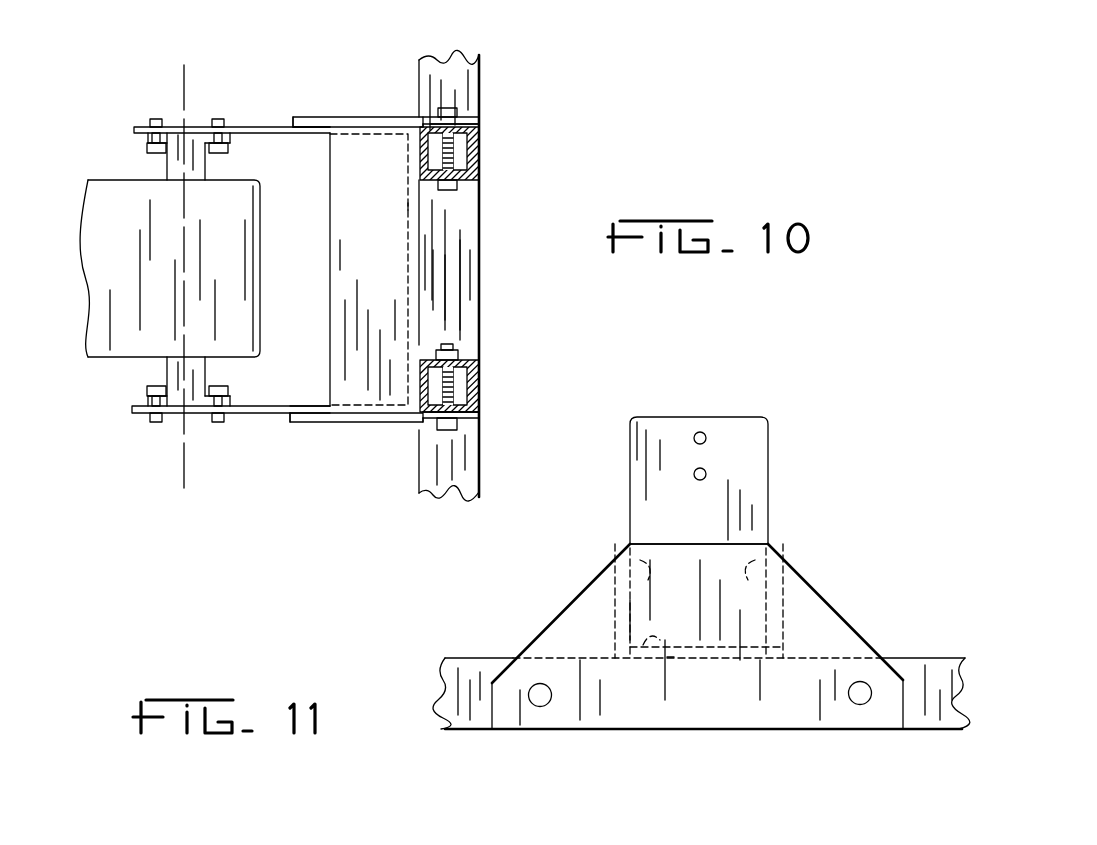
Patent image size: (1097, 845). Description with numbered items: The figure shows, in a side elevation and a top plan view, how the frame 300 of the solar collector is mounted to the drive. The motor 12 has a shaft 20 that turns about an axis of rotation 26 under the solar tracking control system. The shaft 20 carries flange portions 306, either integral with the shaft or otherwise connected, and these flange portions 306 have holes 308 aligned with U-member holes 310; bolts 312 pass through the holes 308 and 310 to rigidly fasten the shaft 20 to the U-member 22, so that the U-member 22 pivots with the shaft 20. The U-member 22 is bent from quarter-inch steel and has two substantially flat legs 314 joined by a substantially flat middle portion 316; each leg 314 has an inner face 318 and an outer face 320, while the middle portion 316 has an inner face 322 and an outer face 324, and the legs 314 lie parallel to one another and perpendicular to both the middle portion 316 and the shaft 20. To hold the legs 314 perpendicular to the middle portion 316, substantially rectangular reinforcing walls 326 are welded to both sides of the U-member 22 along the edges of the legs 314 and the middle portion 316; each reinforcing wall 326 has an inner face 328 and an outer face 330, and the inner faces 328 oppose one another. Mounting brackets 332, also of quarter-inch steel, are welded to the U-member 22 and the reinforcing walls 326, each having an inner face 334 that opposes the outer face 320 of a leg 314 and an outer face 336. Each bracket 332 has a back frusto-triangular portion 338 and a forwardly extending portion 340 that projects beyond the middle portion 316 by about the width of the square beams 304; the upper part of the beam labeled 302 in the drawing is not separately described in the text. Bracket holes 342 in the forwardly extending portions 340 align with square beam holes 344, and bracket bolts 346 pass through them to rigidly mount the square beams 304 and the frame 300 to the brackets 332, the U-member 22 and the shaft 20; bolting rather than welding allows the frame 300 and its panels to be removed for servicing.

In FIG. 10, the motor 12 is at (170, 268).
In FIG. 10, the shaft 20 is at (172, 167).
In FIG. 10, the U-member 22 is at (281, 424).
In FIG. 11, the U-member 22 is at (630, 470).
In FIG. 10, the axis of rotation 26 is at (184, 484).
In FIG. 10, the frame 300 is at (575, 130).
In FIG. 11, the frame 300 is at (849, 530).
In FIG. 10, the upper post portion 302 is at (466, 74).
In FIG. 10, the square beam 304 is at (480, 157).
In FIG. 11, the square beam 304 is at (468, 672).
In FIG. 10, the flange portion 306 is at (234, 150).
In FIG. 10, the hole 308 is at (146, 142).
In FIG. 10, the U-member hole 310 is at (145, 125).
In FIG. 11, the U-member hole 310 is at (707, 474).
In FIG. 10, the bolt 312 is at (157, 119).
In FIG. 10, the leg 314 is at (323, 128).
In FIG. 11, the leg 314 is at (667, 437).
In FIG. 10, the middle portion 316 is at (425, 302).
In FIG. 11, the middle portion 316 is at (667, 660).
In FIG. 10, the inner face 318 is at (316, 137).
In FIG. 10, the outer face 320 is at (270, 125).
In FIG. 11, the outer face 320 is at (699, 480).
In FIG. 10, the inner face 322 is at (408, 203).
In FIG. 11, the inner face 322 is at (643, 646).
In FIG. 10, the outer face 324 is at (420, 253).
In FIG. 11, the outer face 324 is at (678, 660).
In FIG. 10, the reinforcing wall 326 is at (345, 320).
In FIG. 11, the reinforcing wall 326 is at (612, 614).
In FIG. 11, the inner face 328 is at (623, 541).
In FIG. 10, the outer face 330 is at (367, 320).
In FIG. 11, the outer face 330 is at (615, 580).
In FIG. 10, the mounting bracket 332 is at (380, 115).
In FIG. 11, the mounting bracket 332 is at (733, 660).
In FIG. 10, the inner face 334 is at (362, 136).
In FIG. 10, the outer face 336 is at (403, 116).
In FIG. 11, the outer face 336 is at (708, 631).
In FIG. 10, the back frusto-triangular portion 338 is at (297, 101).
In FIG. 11, the back frusto-triangular portion 338 is at (822, 572).
In FIG. 10, the forwardly extending portion 340 is at (467, 106).
In FIG. 11, the forwardly extending portion 340 is at (515, 741).
In FIG. 10, the bracket hole 342 is at (481, 121).
In FIG. 11, the bracket hole 342 is at (550, 705).
In FIG. 10, the square beam hole 344 is at (480, 128).
In FIG. 10, the bracket bolt 346 is at (478, 162).